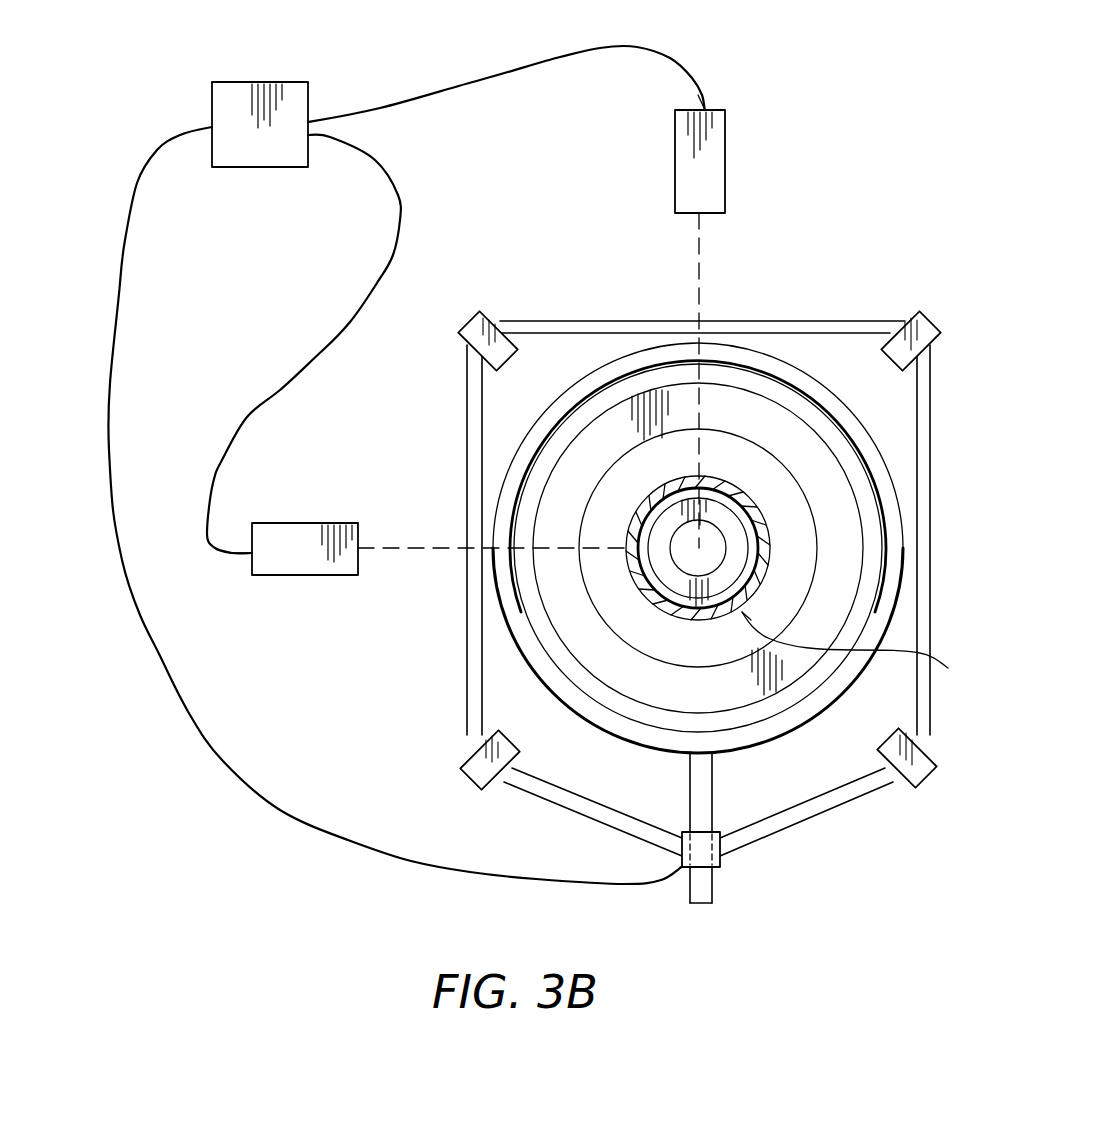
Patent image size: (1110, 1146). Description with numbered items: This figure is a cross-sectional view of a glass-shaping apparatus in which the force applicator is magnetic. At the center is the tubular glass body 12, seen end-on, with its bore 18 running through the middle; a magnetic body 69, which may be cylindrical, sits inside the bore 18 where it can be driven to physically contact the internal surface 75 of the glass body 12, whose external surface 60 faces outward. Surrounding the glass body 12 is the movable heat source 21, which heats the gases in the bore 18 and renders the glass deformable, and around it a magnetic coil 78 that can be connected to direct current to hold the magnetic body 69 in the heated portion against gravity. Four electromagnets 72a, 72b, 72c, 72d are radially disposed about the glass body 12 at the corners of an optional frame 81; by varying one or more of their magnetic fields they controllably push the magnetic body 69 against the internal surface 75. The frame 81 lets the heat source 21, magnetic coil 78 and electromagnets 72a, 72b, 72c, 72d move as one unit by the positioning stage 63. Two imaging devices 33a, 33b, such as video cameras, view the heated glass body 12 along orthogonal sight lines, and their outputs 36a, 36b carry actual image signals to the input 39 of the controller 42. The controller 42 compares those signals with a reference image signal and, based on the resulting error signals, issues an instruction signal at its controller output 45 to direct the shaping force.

The glass body 12 is at (742, 594).
The bore 18 is at (740, 458).
The heat source 21 is at (830, 466).
The imaging device 33a is at (726, 150).
The imaging device 33b is at (316, 577).
The output 36a is at (712, 101).
The output 36b is at (247, 565).
The input 39 is at (318, 106).
The controller 42 is at (246, 168).
The controller output 45 is at (209, 124).
The external surface 60 is at (860, 654).
The positioning stage 63 is at (722, 870).
The magnetic body 69 is at (740, 555).
The electromagnet 72a is at (490, 332).
The electromagnet 72b is at (921, 318).
The electromagnet 72c is at (911, 786).
The electromagnet 72d is at (471, 764).
The internal surface 75 is at (736, 518).
The magnetic coil 78 is at (734, 357).
The frame 81 is at (824, 328).